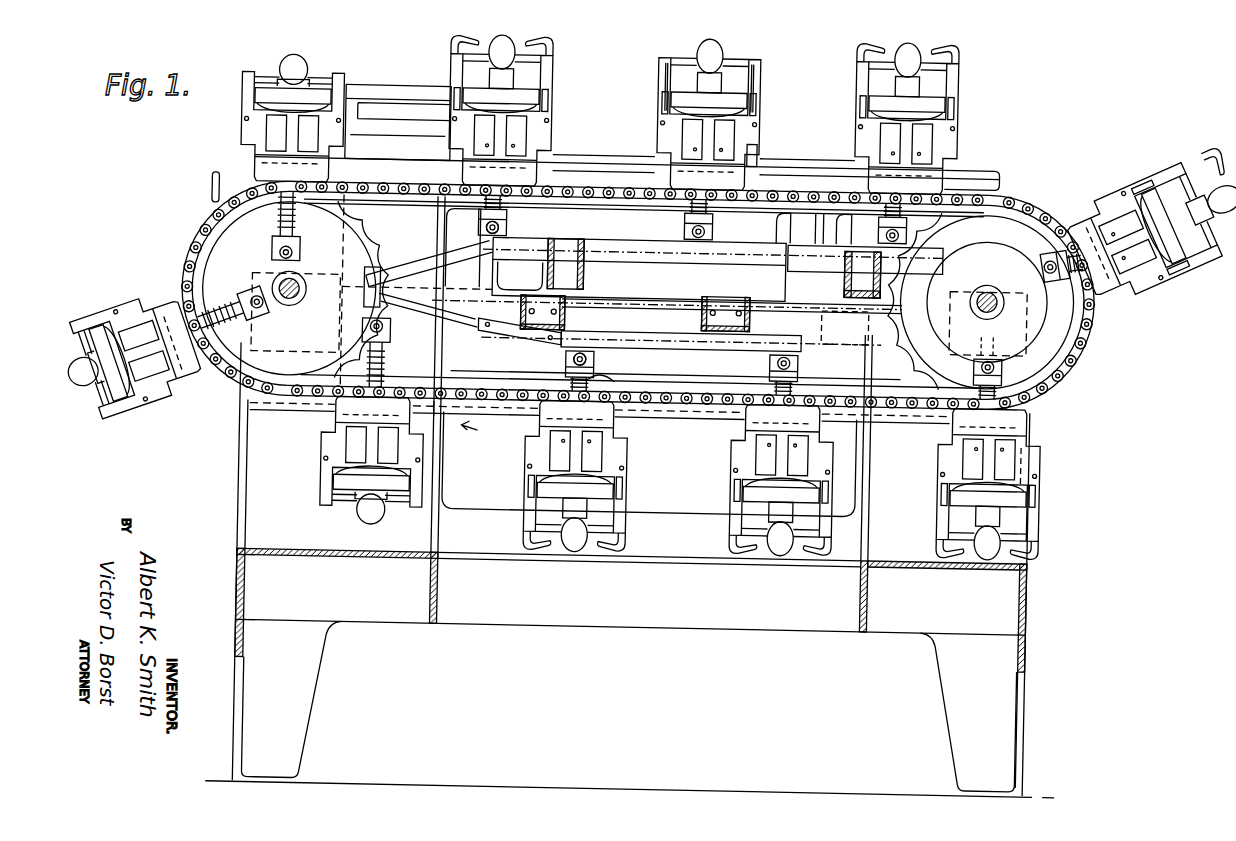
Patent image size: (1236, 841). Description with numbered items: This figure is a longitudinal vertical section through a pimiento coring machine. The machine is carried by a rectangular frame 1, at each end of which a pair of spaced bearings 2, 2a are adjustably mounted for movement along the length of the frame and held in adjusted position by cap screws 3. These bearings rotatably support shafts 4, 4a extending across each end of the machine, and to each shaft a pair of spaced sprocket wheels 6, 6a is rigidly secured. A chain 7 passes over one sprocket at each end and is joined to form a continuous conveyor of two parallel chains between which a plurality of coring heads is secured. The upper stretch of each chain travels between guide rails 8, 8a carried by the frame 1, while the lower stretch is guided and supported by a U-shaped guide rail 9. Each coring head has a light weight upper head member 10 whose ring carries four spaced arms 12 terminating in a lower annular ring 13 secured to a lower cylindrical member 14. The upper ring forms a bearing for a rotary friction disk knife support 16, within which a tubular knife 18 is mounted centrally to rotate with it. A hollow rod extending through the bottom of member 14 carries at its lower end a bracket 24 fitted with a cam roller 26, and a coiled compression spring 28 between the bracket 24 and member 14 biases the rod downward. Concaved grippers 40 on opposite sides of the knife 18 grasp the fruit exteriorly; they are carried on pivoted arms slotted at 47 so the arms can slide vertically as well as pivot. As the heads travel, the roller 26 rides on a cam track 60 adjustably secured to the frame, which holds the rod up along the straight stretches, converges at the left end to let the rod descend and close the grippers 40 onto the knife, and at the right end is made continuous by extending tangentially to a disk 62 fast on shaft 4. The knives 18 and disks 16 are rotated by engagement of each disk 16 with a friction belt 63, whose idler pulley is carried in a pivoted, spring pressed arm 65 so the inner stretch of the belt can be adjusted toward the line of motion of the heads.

The rectangular frame 1 is at (1106, 366).
The bearing 2 is at (990, 300).
The bearing 2a is at (300, 283).
The cap screws 3 is at (375, 35).
The shaft 4 is at (983, 298).
The shaft 4a is at (280, 290).
The sprocket wheel 6 is at (1000, 222).
The sprocket wheel 6a is at (385, 262).
The chain 7 is at (580, 186).
The guide rail 8 is at (745, 205).
The guide rail 8a is at (808, 176).
The U-shaped guide rail 9 is at (478, 431).
The head member 10 is at (345, 486).
The arms 12 is at (245, 130).
The lower annular ring 13 is at (737, 150).
The lower cylindrical member 14 is at (540, 185).
The rotary friction disk knife support 16 is at (305, 90).
The tubular knife 18 is at (502, 75).
The bracket 24 is at (600, 382).
The cam roller 26 is at (503, 232).
The coiled compression spring 28 is at (300, 245).
The concaved gripper members 40 is at (490, 52).
The slot 47 is at (648, 92).
The cam track 60 is at (645, 250).
The disk 62 is at (1040, 325).
The friction belt 63 is at (397, 92).
The arm 65 is at (420, 118).